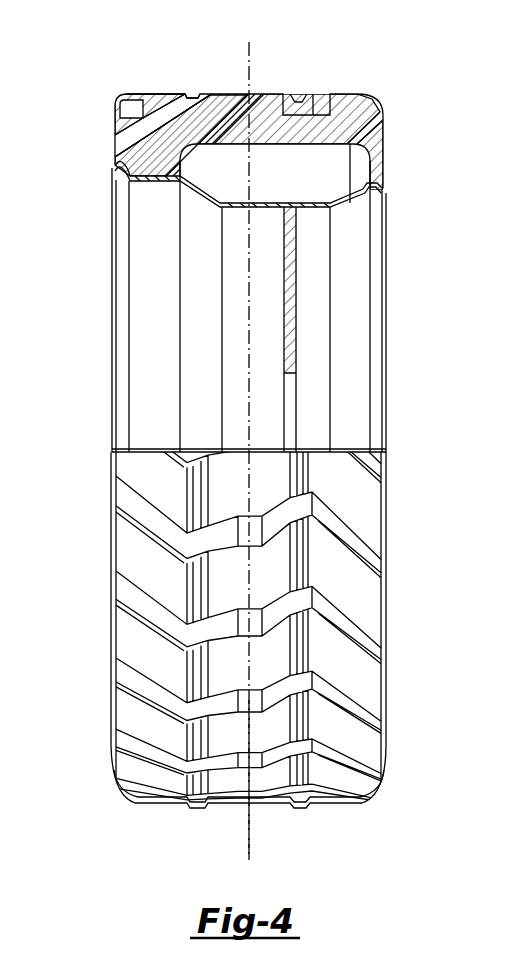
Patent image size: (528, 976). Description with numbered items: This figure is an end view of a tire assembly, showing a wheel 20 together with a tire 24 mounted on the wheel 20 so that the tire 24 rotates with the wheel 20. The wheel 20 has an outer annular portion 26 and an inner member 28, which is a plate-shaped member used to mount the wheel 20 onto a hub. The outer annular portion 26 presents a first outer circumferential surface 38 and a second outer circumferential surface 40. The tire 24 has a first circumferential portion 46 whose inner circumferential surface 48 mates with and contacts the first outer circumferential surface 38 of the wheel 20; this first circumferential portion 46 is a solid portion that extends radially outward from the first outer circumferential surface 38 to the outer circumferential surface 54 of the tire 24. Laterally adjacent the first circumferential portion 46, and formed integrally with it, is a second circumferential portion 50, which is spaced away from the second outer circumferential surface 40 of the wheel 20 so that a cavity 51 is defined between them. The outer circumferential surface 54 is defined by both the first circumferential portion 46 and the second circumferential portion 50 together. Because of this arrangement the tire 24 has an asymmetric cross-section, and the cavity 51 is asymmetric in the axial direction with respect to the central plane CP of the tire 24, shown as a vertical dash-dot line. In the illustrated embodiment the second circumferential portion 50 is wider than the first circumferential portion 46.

The wheel 20 is at (400, 400).
The tire 24 is at (147, 803).
The outer annular portion 26 is at (157, 290).
The inner member 28 is at (292, 278).
The first outer circumferential surface 38 is at (167, 165).
The second outer circumferential surface 40 is at (264, 192).
The first circumferential portion 46 is at (148, 140).
The inner circumferential surface 48 is at (150, 184).
The second circumferential portion 50 is at (232, 115).
The cavity 51 is at (343, 173).
The outer circumferential surface 54 is at (155, 91).
The central plane CP is at (248, 835).